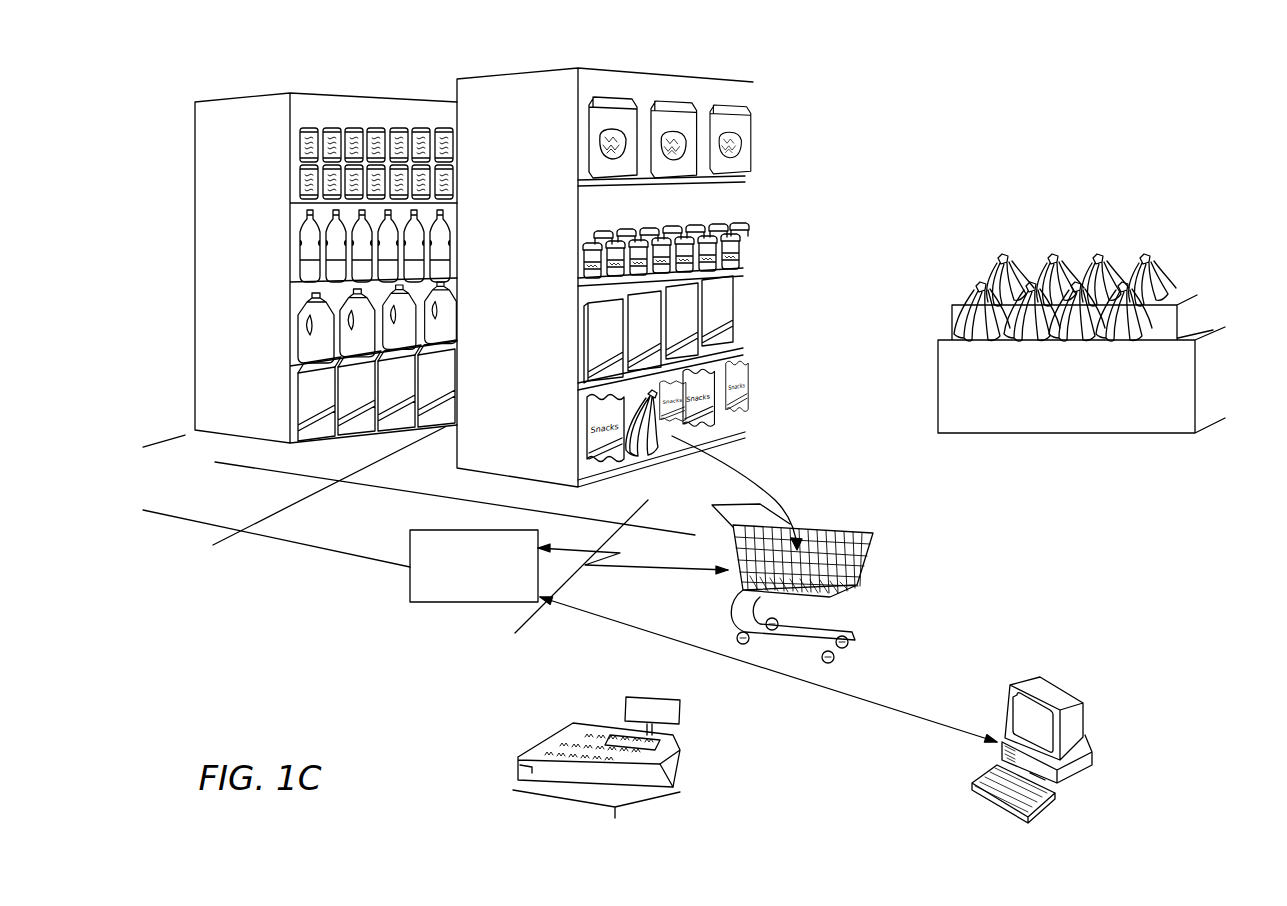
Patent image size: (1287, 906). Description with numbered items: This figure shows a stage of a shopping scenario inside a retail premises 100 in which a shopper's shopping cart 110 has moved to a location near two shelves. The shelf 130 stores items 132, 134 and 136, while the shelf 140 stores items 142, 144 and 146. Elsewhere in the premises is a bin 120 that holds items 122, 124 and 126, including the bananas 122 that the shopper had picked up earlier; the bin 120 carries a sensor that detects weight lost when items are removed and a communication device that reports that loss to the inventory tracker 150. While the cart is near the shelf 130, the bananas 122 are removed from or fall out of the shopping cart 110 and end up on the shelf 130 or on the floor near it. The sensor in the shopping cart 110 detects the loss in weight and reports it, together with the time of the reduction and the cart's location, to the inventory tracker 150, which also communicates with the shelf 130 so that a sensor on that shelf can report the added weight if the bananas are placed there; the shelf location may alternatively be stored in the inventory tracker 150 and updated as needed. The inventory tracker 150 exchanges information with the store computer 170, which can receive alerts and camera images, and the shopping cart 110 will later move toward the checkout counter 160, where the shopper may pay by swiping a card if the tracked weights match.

The retail premises 100 is at (865, 81).
The shopping cart 110 is at (872, 558).
The bin 120 is at (1197, 380).
The bananas 122 is at (657, 450).
The item 124 is at (1034, 257).
The item 126 is at (1100, 267).
The shelf 130 is at (502, 108).
The item 132 is at (588, 327).
The item 134 is at (578, 257).
The item 136 is at (598, 424).
The shelf 140 is at (238, 128).
The item 142 is at (302, 329).
The item 144 is at (302, 256).
The item 146 is at (300, 174).
The inventory tracker 150 is at (410, 597).
The checkout counter 160 is at (680, 752).
The store computer 170 is at (1083, 708).